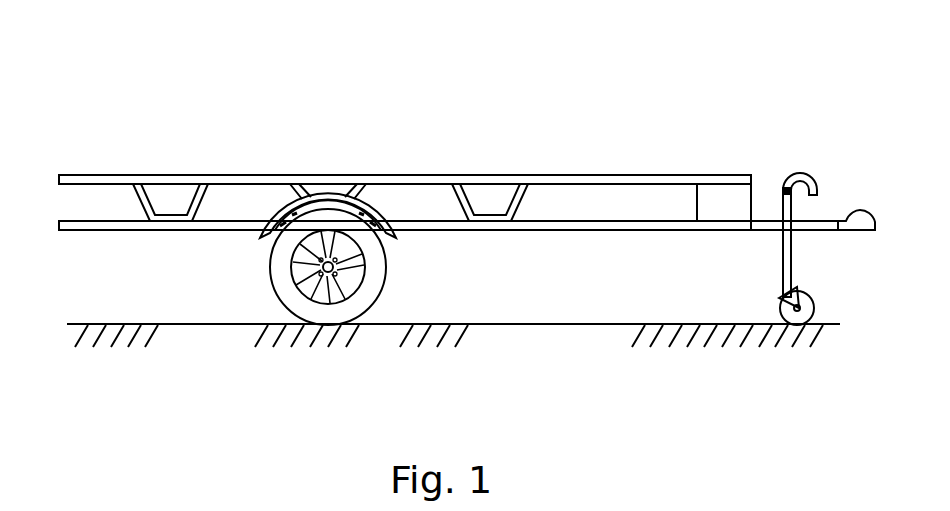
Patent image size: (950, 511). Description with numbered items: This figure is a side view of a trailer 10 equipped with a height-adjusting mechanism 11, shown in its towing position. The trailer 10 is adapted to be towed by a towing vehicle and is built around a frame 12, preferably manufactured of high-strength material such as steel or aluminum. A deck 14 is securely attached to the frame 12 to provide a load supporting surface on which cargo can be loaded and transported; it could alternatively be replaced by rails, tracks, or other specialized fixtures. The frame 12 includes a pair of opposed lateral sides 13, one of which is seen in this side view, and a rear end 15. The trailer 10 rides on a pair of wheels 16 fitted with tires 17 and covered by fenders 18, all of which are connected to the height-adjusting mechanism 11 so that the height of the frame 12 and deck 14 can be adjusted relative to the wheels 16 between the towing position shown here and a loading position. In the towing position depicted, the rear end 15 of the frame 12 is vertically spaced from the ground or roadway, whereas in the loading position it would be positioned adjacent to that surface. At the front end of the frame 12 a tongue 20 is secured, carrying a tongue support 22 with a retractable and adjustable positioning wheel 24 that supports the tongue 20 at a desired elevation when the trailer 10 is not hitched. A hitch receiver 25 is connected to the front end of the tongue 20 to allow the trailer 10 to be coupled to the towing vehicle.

The trailer 10 is at (76, 80).
The height-adjusting mechanism 11 is at (403, 272).
The frame 12 is at (213, 224).
The lateral sides 13 is at (622, 231).
The deck 14 is at (573, 221).
The rear end 15 is at (59, 226).
The wheels 16 is at (303, 300).
The tires 17 is at (368, 312).
The fenders 18 is at (320, 194).
The tongue 20 is at (773, 216).
The tongue support 22 is at (797, 172).
The positioning wheel 24 is at (805, 322).
The hitch receiver 25 is at (860, 210).